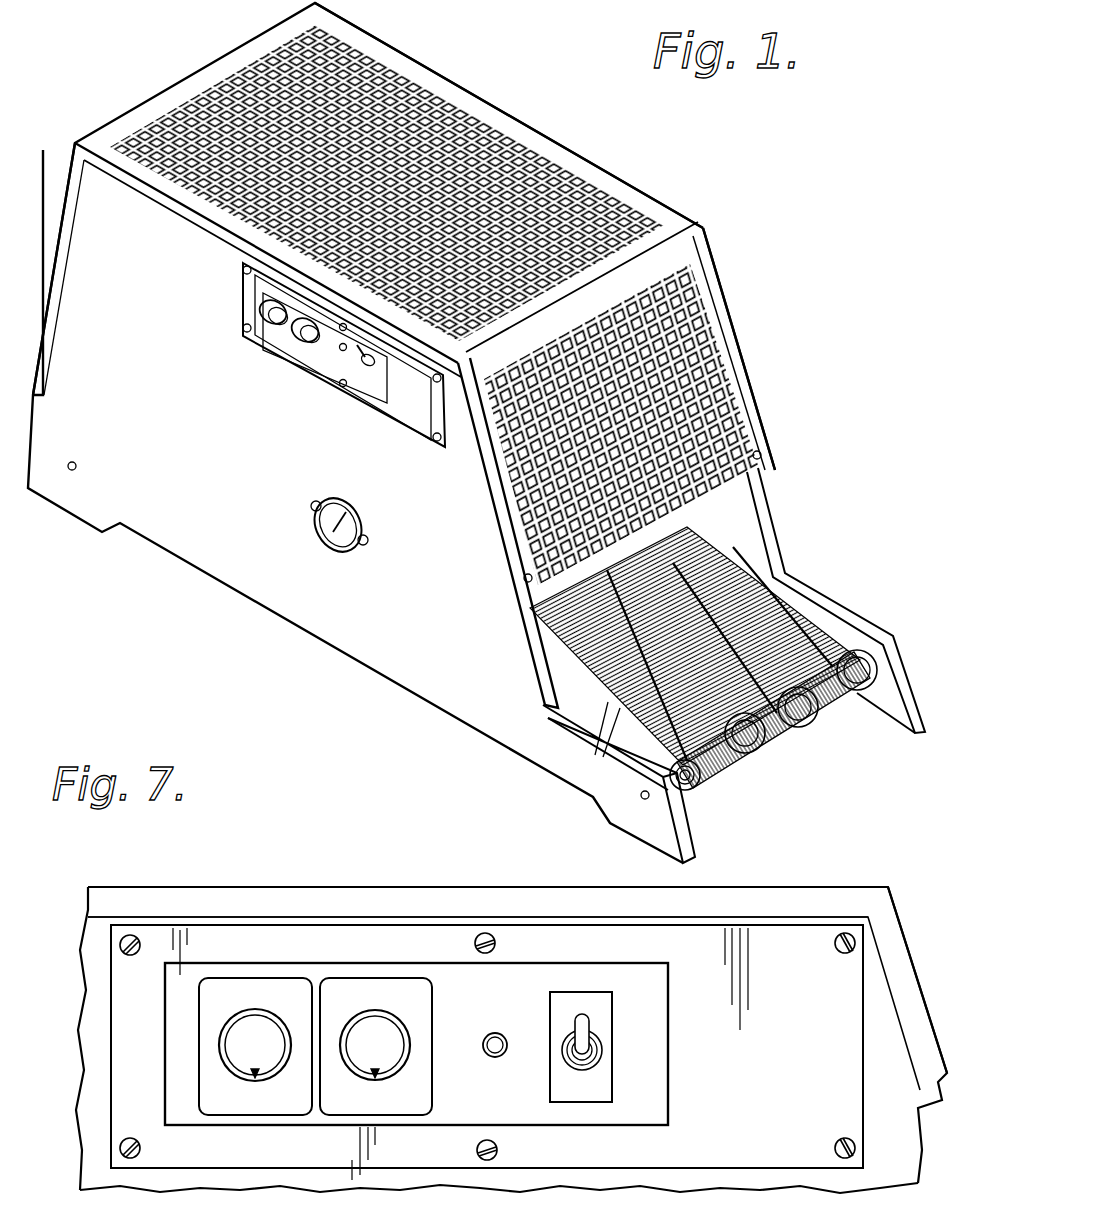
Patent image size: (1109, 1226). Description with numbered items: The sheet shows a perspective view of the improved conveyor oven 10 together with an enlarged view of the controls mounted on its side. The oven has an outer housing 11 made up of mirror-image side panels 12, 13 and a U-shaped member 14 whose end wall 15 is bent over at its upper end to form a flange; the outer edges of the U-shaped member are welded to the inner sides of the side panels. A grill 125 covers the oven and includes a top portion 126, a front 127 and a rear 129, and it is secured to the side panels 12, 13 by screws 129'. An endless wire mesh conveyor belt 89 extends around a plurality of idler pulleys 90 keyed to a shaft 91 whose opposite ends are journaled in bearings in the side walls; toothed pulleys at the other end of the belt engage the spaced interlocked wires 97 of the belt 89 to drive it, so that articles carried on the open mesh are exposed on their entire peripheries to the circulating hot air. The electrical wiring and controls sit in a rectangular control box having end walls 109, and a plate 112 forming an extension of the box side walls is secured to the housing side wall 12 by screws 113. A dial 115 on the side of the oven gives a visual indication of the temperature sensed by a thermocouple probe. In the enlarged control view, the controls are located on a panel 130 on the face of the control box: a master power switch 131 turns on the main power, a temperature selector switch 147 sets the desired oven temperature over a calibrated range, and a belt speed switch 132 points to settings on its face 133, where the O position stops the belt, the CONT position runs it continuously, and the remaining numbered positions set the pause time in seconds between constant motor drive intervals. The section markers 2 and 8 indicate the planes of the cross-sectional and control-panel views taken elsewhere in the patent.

In FIG. 1, the section line 2- 2 is at (175, 17).
In FIG. 7, the section line 8- 8 is at (35, 1140).
In FIG. 1, the conveyor oven 10 is at (742, 189).
In FIG. 1, the outer housing 11 is at (365, 668).
In FIG. 1, the side panel 12 is at (428, 700).
In FIG. 7, the side panel 12 is at (85, 1152).
In FIG. 1, the side panel 13 is at (773, 510).
In FIG. 1, the U-shaped member 14 is at (690, 522).
In FIG. 1, the end wall 15 is at (680, 532).
In FIG. 1, the wire mesh conveyor belt 89 is at (735, 785).
In FIG. 1, the idler pulleys 90 is at (893, 640).
In FIG. 1, the shaft 91 is at (795, 745).
In FIG. 1, the interlocked wires 97 is at (601, 746).
In FIG. 7, the end wall 109 is at (508, 1004).
In FIG. 1, the plate 112 is at (415, 425).
In FIG. 7, the plate 112 is at (293, 928).
In FIG. 1, the screws 113 is at (247, 328).
In FIG. 7, the screws 113 is at (130, 935).
In FIG. 1, the dial 115 is at (315, 532).
In FIG. 1, the grill 125 is at (590, 155).
In FIG. 7, the grill 125 is at (405, 888).
In FIG. 1, the top portion 126 is at (490, 107).
In FIG. 7, the top portion 126 is at (585, 902).
In FIG. 1, the front 127 is at (725, 335).
In FIG. 7, the front 127 is at (955, 960).
In FIG. 1, the rear 129 is at (51, 269).
In FIG. 1, the screws 129' is at (635, 506).
In FIG. 7, the panel 130 is at (668, 1068).
In FIG. 1, the master power switch 131 is at (368, 368).
In FIG. 7, the master power switch 131 is at (605, 1021).
In FIG. 1, the belt speed switch 132 is at (305, 340).
In FIG. 7, the belt speed switch 132 is at (410, 1055).
In FIG. 7, the face 133 is at (392, 985).
In FIG. 1, the temperature selector switch 147 is at (270, 322).
In FIG. 7, the temperature selector switch 147 is at (262, 976).